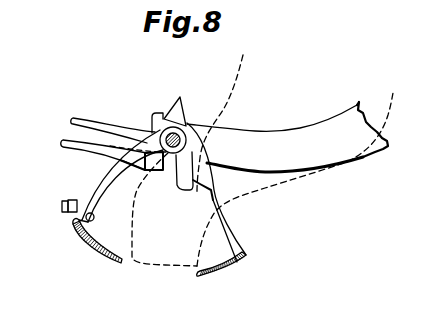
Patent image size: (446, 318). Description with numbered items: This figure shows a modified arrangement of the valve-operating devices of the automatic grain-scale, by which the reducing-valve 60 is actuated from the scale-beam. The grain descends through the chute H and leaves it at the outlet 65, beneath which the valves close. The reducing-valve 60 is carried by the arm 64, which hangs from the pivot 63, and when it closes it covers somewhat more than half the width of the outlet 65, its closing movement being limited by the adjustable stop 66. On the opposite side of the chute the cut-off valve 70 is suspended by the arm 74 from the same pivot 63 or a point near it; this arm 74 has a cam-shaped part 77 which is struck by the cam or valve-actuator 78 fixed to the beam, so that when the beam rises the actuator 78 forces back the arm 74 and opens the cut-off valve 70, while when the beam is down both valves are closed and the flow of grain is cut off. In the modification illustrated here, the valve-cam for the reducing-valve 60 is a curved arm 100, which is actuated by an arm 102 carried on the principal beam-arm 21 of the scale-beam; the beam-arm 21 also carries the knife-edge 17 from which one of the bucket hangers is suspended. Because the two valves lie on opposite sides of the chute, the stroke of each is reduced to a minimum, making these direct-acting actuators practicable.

The chute H is at (247, 70).
The pivot or knife-edge 17 is at (180, 97).
The principal arm of the scale-beam 21 is at (290, 132).
The reducing-valve 60 is at (88, 243).
The pivot 63 is at (180, 134).
The arm 64 is at (108, 179).
The outlet 65 is at (172, 258).
The adjustable stop 66 is at (62, 206).
The cut-off valve 70 is at (225, 272).
The arm 74 is at (233, 227).
The cam-shaped part 77 is at (211, 162).
The cam or valve-actuator 78 is at (185, 185).
The curved arm 100 is at (113, 131).
The arm 102 is at (89, 150).